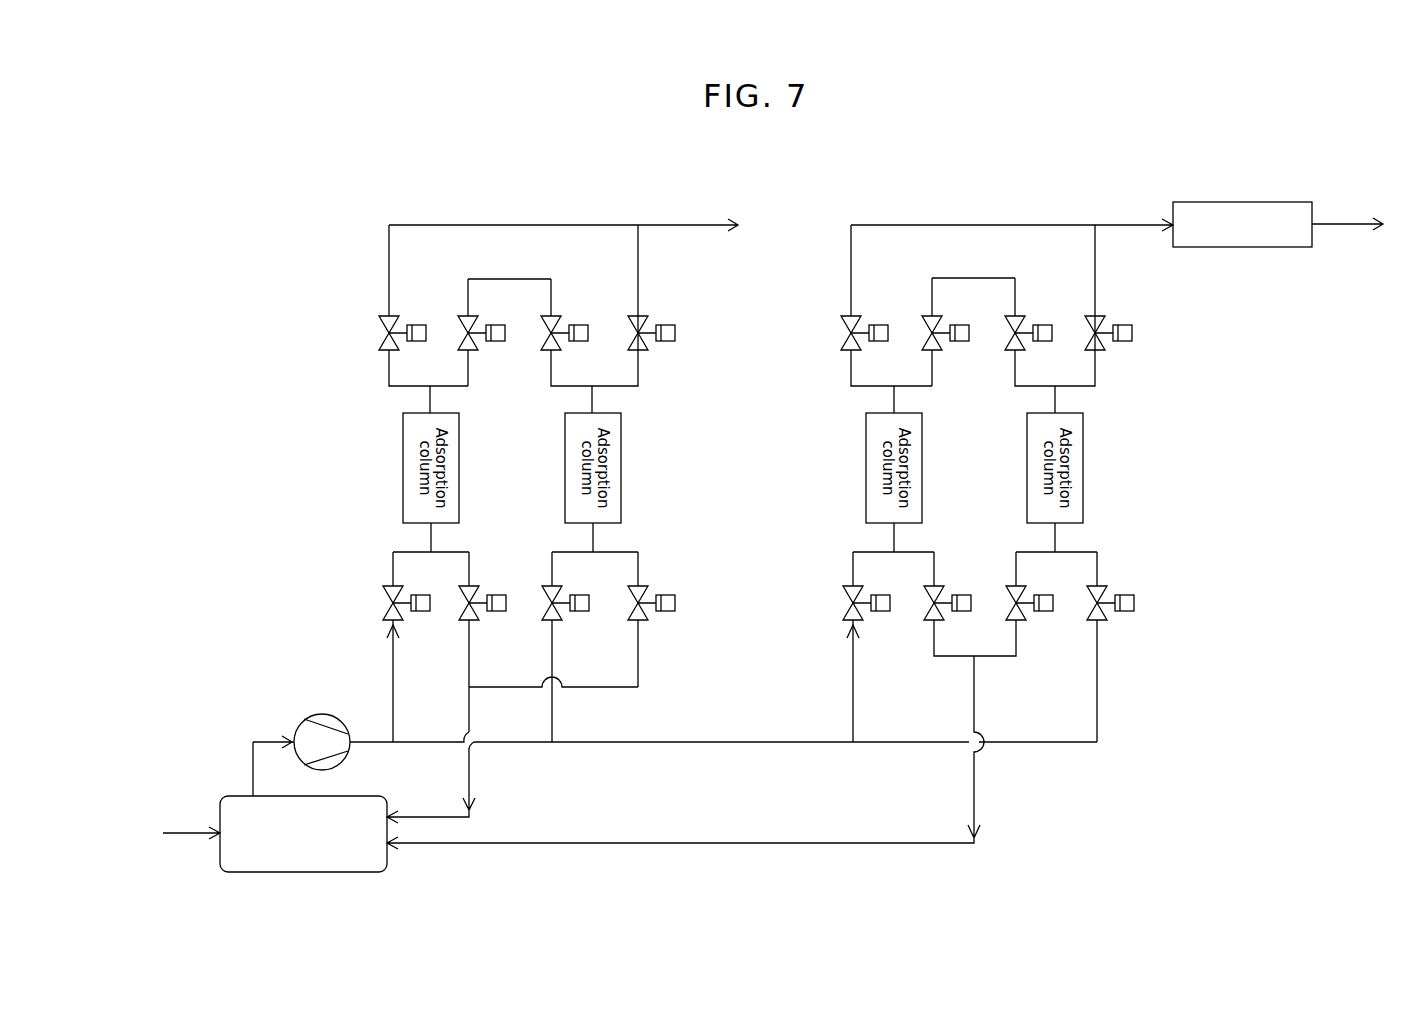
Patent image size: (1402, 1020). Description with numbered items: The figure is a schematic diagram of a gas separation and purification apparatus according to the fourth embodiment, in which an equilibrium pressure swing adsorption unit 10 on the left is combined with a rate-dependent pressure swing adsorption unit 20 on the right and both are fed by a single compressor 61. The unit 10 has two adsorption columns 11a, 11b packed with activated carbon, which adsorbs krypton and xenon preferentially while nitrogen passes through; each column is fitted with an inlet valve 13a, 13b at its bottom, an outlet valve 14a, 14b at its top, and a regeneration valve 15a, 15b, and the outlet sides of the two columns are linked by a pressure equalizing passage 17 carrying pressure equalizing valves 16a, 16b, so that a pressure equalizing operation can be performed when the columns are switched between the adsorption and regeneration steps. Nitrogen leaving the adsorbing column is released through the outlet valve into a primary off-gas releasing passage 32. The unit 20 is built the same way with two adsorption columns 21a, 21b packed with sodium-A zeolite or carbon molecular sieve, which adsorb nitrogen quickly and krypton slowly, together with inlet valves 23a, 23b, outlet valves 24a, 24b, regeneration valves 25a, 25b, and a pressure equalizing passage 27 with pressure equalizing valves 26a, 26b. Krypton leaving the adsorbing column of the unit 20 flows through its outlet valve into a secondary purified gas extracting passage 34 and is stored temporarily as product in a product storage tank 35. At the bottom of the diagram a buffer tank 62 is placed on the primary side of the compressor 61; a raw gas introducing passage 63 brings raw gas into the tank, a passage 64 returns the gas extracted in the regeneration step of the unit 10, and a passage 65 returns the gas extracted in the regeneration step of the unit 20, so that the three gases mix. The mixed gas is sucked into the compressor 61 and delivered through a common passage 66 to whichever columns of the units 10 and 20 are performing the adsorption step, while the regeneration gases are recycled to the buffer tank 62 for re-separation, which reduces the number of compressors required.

The equilibrium pressure swing adsorption unit 10 is at (340, 425).
The adsorption column 11a is at (403, 471).
The adsorption column 11b is at (623, 481).
The inlet valve 13a is at (380, 601).
The inlet valve 13b is at (542, 612).
The outlet valve 14a is at (380, 333).
The outlet valve 14b is at (648, 340).
The regeneration valve 15a is at (460, 615).
The regeneration valve 15b is at (648, 612).
The pressure equalizing valve 16a is at (462, 336).
The pressure equalizing valve 16b is at (541, 340).
The pressure equalizing passage 17 is at (512, 279).
The rate-dependent pressure swing adsorption unit 20 is at (1125, 425).
The adsorption column 21a is at (867, 486).
The adsorption column 21b is at (1083, 479).
The inlet valve 23a is at (843, 608).
The inlet valve 23b is at (1108, 612).
The outlet valve 24a is at (841, 337).
The outlet valve 24b is at (1105, 340).
The regeneration valve 25a is at (925, 613).
The regeneration valve 25b is at (1005, 595).
The pressure equalizing valve 26a is at (924, 338).
The pressure equalizing valve 26b is at (1007, 340).
The pressure equalizing passage 27 is at (978, 278).
The primary off-gas releasing passage 32 is at (677, 223).
The secondary purified gas extracting passage 34 is at (1130, 223).
The product storage tank 35 is at (1223, 202).
The compressor 61 is at (316, 715).
The buffer tank 62 is at (370, 796).
The raw gas introducing passage 63 is at (184, 833).
The passage 64 is at (472, 792).
The passage 65 is at (705, 842).
The passage 66 is at (818, 745).